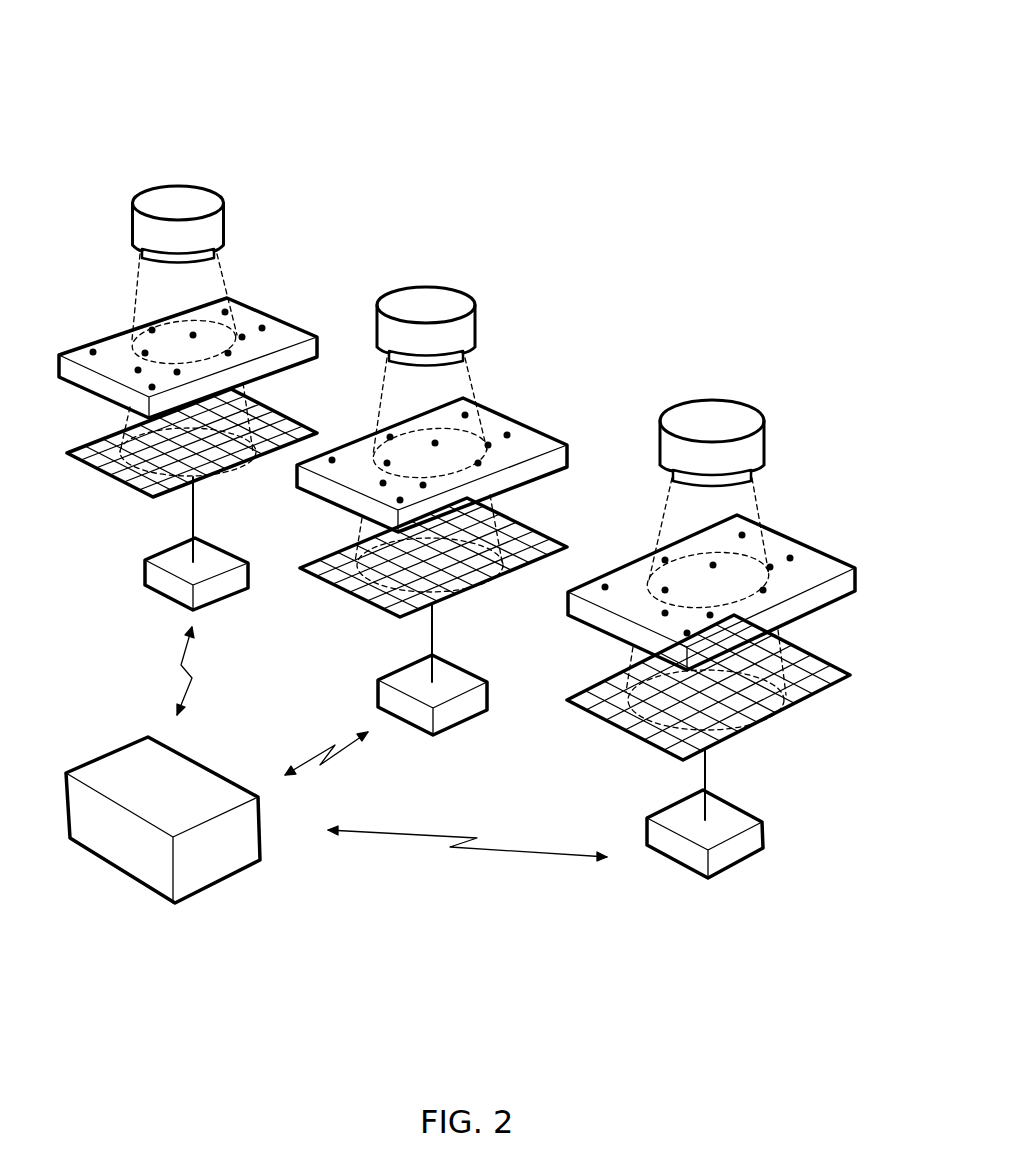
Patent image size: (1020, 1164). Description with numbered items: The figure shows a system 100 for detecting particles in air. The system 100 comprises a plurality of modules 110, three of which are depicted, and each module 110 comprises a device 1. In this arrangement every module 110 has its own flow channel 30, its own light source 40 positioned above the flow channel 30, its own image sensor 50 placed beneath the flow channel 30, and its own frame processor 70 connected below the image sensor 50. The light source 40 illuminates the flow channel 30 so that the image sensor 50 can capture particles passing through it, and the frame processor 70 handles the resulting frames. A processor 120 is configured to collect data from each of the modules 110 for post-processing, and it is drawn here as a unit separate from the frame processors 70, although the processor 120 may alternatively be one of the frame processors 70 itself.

The system 100 is at (778, 92).
The module 110 is at (267, 163).
The device 1 is at (300, 223).
The light source 40 is at (200, 197).
The flow channel 30 is at (278, 333).
The image sensor 50 is at (307, 427).
The frame processor 70 is at (150, 577).
The processor 120 is at (212, 853).